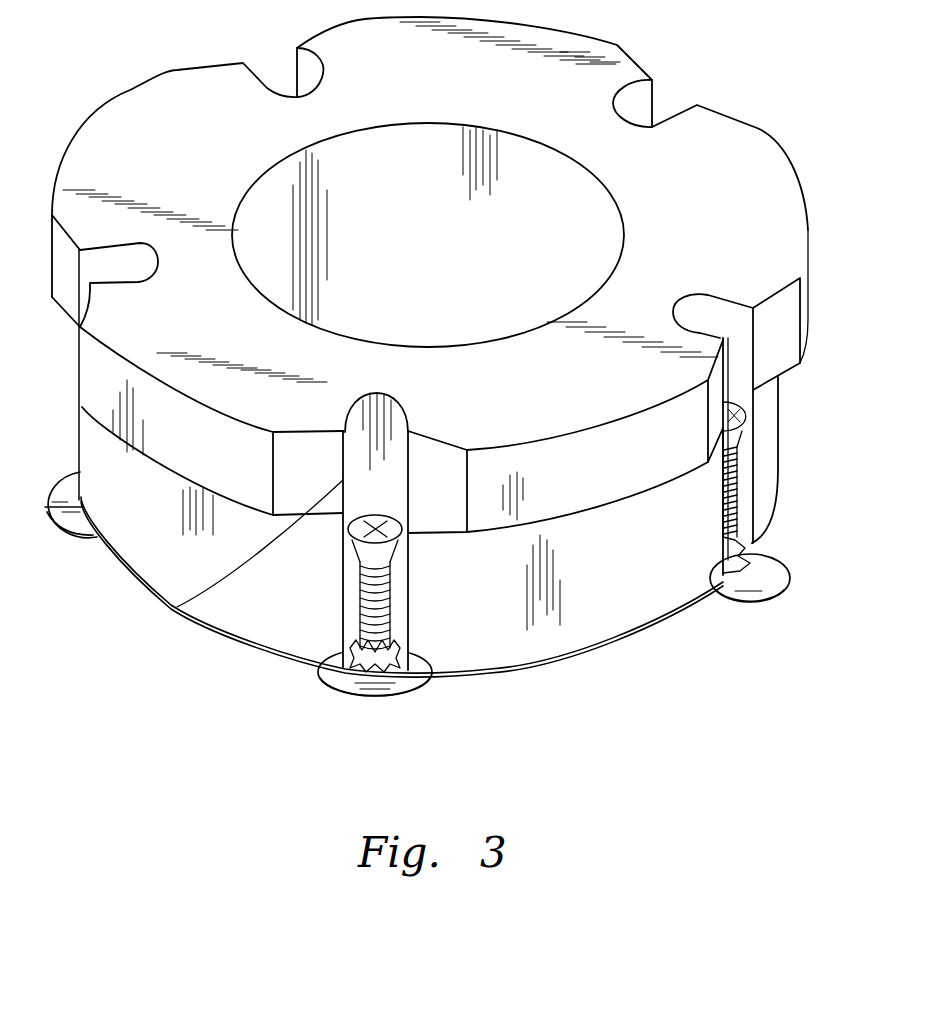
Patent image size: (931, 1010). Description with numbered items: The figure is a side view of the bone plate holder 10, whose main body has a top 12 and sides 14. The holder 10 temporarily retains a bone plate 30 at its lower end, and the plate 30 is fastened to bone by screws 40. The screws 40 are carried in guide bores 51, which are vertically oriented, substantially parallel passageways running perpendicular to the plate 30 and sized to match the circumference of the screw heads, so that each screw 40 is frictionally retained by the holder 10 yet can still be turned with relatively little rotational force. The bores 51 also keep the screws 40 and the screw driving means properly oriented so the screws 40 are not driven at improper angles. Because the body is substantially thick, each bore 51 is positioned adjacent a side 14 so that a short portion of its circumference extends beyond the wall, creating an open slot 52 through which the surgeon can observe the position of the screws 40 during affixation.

The bone plate holder 10 is at (450, 453).
The top 12 is at (698, 157).
The sides 14 is at (767, 430).
The bone plate 30 is at (393, 699).
The screws 40 is at (362, 588).
The guide bores 51 is at (684, 298).
The open slot 52 is at (177, 607).